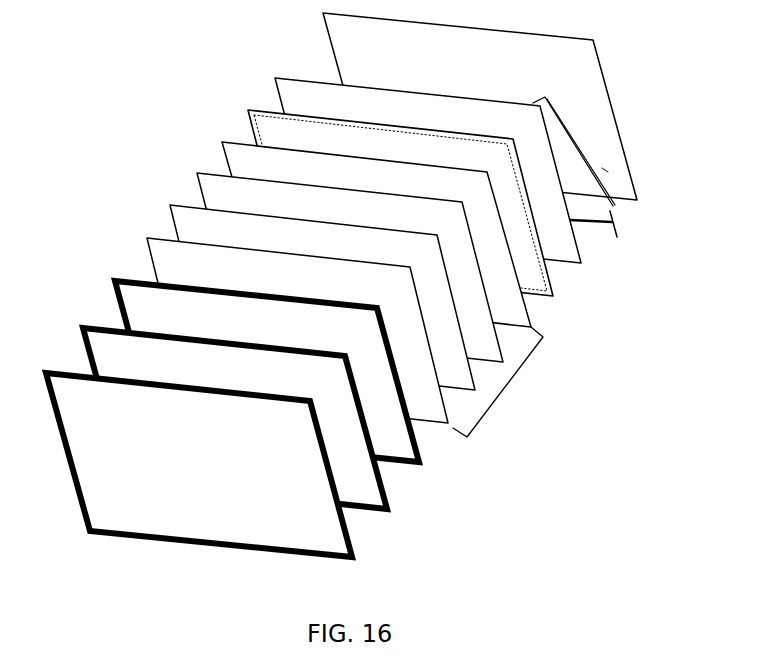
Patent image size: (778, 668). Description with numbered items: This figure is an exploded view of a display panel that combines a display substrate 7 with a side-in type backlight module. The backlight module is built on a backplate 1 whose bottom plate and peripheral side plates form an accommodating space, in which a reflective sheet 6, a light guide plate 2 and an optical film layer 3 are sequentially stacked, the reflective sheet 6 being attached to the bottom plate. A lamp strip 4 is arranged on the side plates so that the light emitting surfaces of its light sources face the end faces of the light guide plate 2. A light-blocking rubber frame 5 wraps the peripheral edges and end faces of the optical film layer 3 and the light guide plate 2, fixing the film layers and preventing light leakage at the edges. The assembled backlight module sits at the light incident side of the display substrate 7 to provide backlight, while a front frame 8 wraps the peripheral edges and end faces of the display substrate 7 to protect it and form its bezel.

The backplate 1 is at (623, 150).
The light guide plate 2 is at (553, 297).
The optical film layer 3 is at (507, 390).
The lamp strip 4 is at (617, 223).
The rubber frame 5 is at (422, 465).
The reflective sheet 6 is at (581, 263).
The display substrate 7 is at (391, 513).
The front frame 8 is at (355, 560).